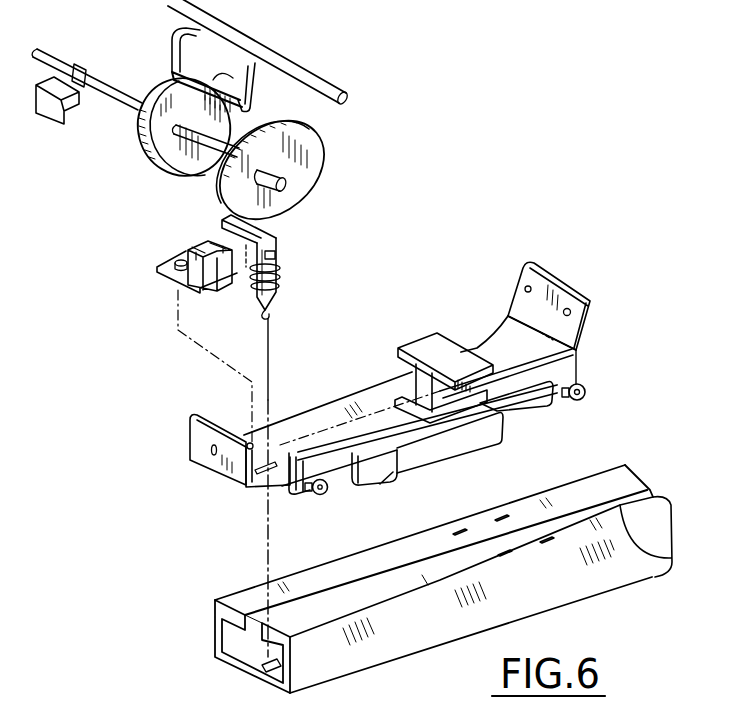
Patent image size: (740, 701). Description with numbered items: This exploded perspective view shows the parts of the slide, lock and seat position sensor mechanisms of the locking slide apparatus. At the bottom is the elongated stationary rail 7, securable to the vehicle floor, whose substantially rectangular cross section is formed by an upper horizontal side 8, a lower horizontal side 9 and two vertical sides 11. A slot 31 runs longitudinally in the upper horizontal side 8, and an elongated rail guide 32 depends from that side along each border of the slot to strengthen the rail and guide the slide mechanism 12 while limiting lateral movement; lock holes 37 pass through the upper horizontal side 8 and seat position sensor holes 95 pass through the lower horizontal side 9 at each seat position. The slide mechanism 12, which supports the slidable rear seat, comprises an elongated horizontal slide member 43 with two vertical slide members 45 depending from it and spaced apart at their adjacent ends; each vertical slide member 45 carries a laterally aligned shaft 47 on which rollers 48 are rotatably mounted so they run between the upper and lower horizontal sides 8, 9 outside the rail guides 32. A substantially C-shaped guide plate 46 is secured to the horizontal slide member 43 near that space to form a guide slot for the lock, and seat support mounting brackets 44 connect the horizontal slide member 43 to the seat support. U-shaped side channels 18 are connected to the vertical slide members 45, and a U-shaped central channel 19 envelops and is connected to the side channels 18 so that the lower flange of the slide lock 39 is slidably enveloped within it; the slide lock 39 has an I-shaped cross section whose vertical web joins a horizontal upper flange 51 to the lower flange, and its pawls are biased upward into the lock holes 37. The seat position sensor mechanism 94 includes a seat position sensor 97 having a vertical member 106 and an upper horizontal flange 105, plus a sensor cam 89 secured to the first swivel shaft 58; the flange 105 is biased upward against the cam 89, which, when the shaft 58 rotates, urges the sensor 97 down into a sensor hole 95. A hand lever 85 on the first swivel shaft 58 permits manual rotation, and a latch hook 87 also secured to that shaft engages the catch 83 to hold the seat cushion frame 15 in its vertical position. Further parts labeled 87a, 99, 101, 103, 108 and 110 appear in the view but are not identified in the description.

The stationary rail 7 is at (397, 653).
The upper horizontal side 8 is at (660, 503).
The lower horizontal side 9 is at (223, 657).
The vertical sides 11 is at (227, 627).
The slide mechanism 12 is at (503, 337).
The seat cushion frame 15 is at (308, 75).
The side channels 18 is at (370, 470).
The central channel 19 is at (432, 462).
The slot 31 is at (672, 557).
The rail guide 32 is at (260, 608).
The lock holes 37 is at (547, 540).
The slide lock 39 is at (425, 358).
The horizontal slide member 43 is at (340, 402).
The seat support mounting brackets 44 is at (192, 425).
The vertical slide members 45 is at (330, 470).
The guide plate 46 is at (408, 400).
The shaft 47 is at (270, 497).
The roller 48 is at (317, 502).
The horizontal upper flange 51 is at (415, 347).
The first swivel shaft 58 is at (130, 108).
The catch 83 is at (190, 80).
The hand lever 85 is at (50, 113).
The latch hook 87 is at (163, 163).
The boss on strap 87a is at (224, 75).
The sensor cam 89 is at (290, 187).
The seat position sensor mechanism 94 is at (386, 229).
The seat position sensor hole 95 is at (273, 667).
The seat position sensor 97 is at (278, 243).
The mounting plate 99 is at (162, 262).
The tab of end bracket 101 is at (238, 475).
The block 103 is at (218, 288).
The upper horizontal flange 105 is at (223, 218).
The vertical member 106 is at (278, 292).
The notch 108 is at (275, 256).
The hook end 110 is at (271, 316).